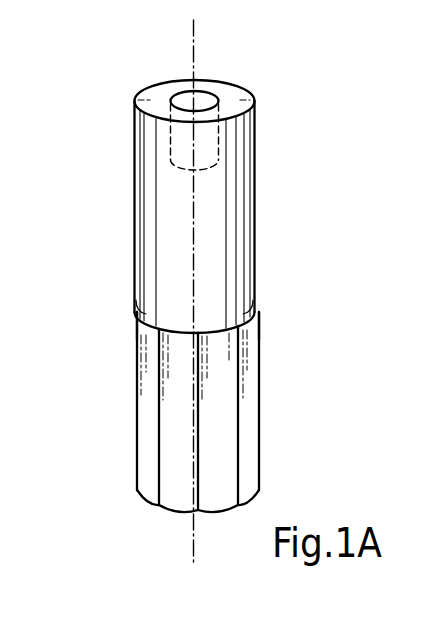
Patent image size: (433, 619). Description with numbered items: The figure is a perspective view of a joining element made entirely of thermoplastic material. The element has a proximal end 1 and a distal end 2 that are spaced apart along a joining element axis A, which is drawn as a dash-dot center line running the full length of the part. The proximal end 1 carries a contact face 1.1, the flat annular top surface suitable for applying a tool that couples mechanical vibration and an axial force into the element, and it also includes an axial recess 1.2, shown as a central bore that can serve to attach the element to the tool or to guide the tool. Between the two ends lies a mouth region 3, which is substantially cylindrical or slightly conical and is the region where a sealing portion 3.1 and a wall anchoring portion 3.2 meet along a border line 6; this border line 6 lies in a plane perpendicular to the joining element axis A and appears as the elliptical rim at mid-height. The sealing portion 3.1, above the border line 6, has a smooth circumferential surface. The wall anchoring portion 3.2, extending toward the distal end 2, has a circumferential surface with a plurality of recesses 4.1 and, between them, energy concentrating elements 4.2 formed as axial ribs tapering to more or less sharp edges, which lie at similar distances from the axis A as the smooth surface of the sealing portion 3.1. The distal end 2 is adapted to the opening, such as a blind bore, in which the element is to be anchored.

The proximal end 1 is at (128, 128).
The contact face 1.1 is at (227, 104).
The axial recess 1.2 is at (187, 102).
The distal end 2 is at (129, 462).
The mouth region 3 is at (128, 320).
The sealing portion 3.1 is at (240, 268).
The wall anchoring portion 3.2 is at (252, 338).
The recesses 4.1 is at (179, 489).
The energy concentrating elements 4.2 is at (198, 403).
The border line 6 is at (176, 322).
The joining element axis A is at (194, 37).